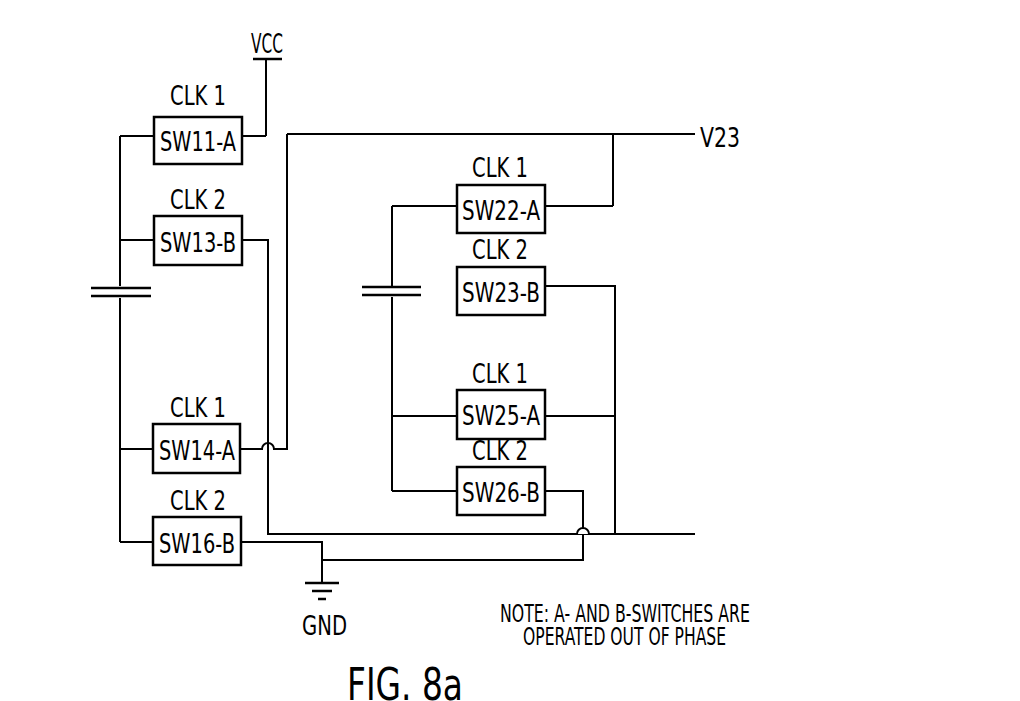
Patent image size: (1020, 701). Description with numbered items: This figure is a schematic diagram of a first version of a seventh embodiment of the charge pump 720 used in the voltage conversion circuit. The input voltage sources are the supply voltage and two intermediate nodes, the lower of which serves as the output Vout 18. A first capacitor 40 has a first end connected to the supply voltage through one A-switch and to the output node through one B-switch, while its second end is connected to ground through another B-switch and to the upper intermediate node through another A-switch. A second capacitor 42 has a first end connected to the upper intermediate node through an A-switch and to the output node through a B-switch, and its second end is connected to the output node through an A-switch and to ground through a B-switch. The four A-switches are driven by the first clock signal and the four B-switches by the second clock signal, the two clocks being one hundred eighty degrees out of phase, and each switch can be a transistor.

The first capacitor 40 is at (137, 297).
The second capacitor 42 is at (405, 299).
The charge pump 720 is at (104, 356).
The Vout 18 is at (737, 537).